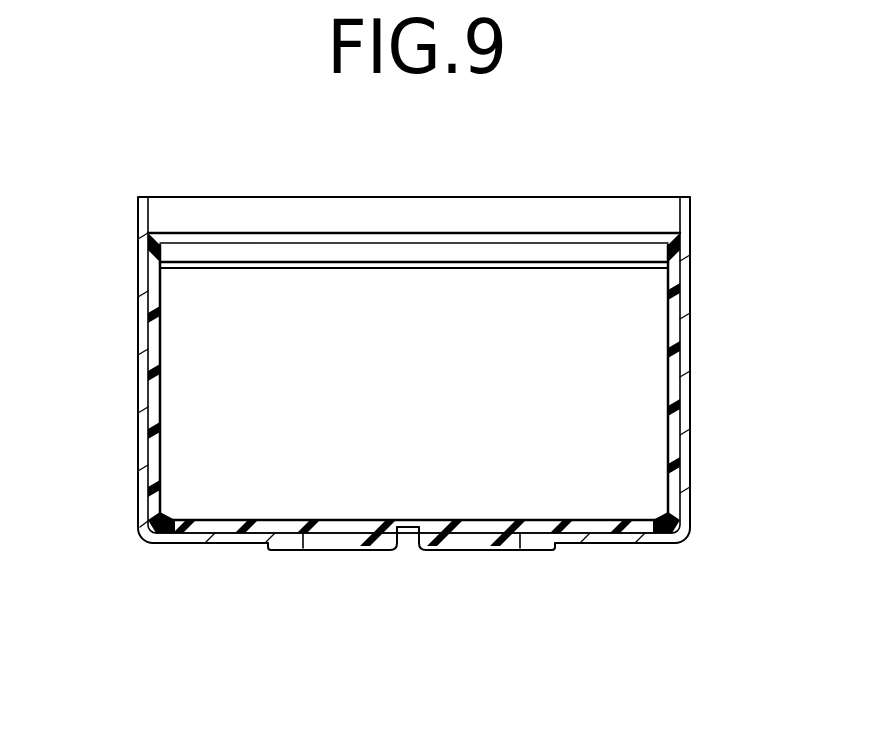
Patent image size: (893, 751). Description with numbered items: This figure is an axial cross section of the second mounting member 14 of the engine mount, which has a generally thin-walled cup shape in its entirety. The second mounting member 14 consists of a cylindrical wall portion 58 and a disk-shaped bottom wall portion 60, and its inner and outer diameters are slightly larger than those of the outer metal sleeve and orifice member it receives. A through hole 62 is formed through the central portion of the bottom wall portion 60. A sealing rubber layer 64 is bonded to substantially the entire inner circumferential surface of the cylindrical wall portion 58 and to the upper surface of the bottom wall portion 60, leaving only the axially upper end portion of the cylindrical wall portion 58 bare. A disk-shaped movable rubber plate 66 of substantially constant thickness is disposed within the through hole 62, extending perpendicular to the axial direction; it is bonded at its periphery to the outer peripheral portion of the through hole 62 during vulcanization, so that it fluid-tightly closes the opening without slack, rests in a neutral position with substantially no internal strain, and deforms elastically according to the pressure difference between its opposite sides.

The second mounting member 14 is at (748, 379).
The cylindrical wall portion 58 is at (145, 370).
The bottom wall portion 60 is at (220, 537).
The through hole 62 is at (518, 538).
The sealing rubber layer 64 is at (155, 335).
The movable rubber plate 66 is at (350, 535).